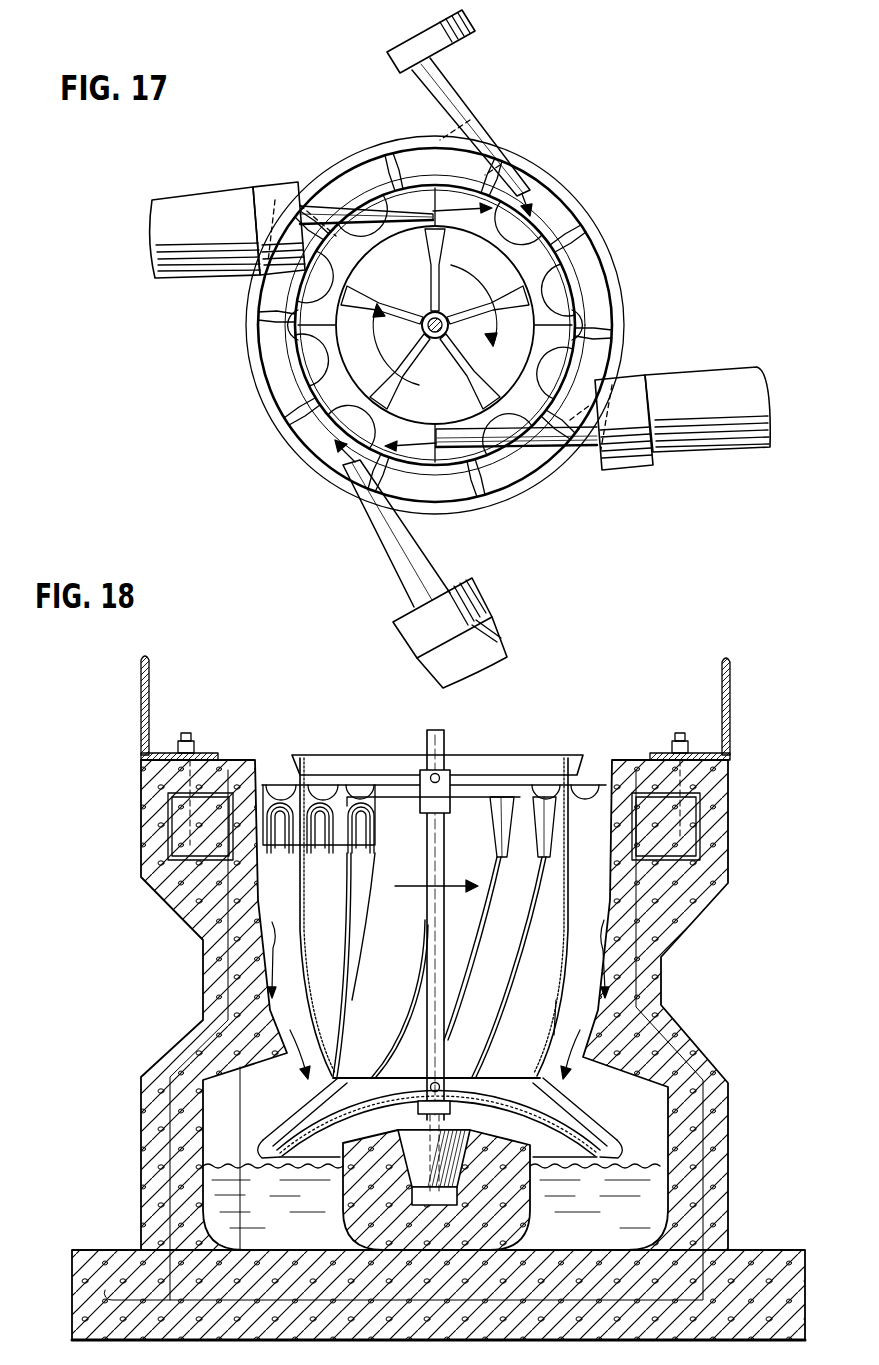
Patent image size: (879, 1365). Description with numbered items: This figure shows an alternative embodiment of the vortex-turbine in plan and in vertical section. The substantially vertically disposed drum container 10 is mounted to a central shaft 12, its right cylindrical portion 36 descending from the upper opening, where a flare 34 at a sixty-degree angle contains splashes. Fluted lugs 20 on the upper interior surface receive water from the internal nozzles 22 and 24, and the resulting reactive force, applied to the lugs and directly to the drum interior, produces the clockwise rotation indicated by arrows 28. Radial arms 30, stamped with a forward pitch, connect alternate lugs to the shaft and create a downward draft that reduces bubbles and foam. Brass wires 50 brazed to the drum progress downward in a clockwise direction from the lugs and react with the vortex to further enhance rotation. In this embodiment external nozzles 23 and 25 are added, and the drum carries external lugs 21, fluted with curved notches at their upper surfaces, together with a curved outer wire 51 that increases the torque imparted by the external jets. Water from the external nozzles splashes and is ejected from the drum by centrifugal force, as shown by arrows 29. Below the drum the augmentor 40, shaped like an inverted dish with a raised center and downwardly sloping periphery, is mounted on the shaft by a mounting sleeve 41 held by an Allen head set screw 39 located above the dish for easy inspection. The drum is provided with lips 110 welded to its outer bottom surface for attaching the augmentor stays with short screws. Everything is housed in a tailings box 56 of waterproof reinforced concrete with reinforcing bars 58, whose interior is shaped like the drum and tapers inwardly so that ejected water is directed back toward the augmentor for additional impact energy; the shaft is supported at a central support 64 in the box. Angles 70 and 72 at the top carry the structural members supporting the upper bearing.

In FIG. 18, the drum container 10 is at (562, 732).
In FIG. 18, the central shaft 12 is at (441, 940).
In FIG. 17, the lugs 20 is at (320, 352).
In FIG. 18, the lugs 20 is at (360, 830).
In FIG. 17, the external lugs 21 is at (572, 252).
In FIG. 18, the external lugs 21 is at (268, 900).
In FIG. 17, the nozzle 22 is at (327, 207).
In FIG. 17, the external nozzle 23 is at (484, 114).
In FIG. 17, the nozzle 24 is at (542, 470).
In FIG. 17, the external nozzle 25 is at (412, 568).
In FIG. 18, the arrows 28 is at (442, 886).
In FIG. 18, the arrows 29 is at (438, 945).
In FIG. 17, the radial arms 30 is at (404, 309).
In FIG. 17, the flare 34 is at (590, 222).
In FIG. 18, the flare 34 is at (365, 755).
In FIG. 18, the right cylindrical portion 36 is at (340, 1070).
In FIG. 17, the Allen head set screw 39 is at (435, 340).
In FIG. 18, the Allen head set screw 39 is at (446, 774).
In FIG. 18, the augmentor 40 is at (284, 1112).
In FIG. 18, the mounting sleeve 41 is at (418, 1108).
In FIG. 18, the wires 50 is at (356, 936).
In FIG. 18, the wire 51 is at (578, 958).
In FIG. 18, the tailings box 56 is at (178, 1043).
In FIG. 18, the reinforcing bars 58 is at (168, 833).
In FIG. 18, the central support 64 is at (345, 1209).
In FIG. 18, the angle 70 is at (140, 704).
In FIG. 18, the angle 72 is at (730, 705).
In FIG. 18, the lips 110 is at (312, 1040).